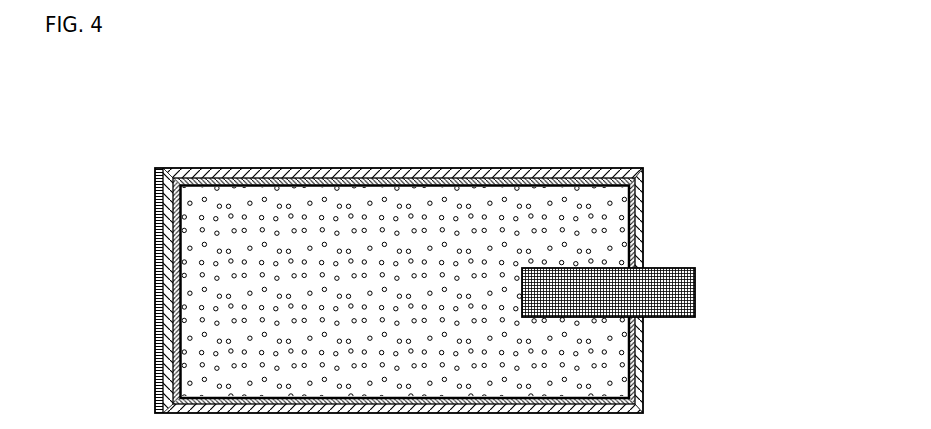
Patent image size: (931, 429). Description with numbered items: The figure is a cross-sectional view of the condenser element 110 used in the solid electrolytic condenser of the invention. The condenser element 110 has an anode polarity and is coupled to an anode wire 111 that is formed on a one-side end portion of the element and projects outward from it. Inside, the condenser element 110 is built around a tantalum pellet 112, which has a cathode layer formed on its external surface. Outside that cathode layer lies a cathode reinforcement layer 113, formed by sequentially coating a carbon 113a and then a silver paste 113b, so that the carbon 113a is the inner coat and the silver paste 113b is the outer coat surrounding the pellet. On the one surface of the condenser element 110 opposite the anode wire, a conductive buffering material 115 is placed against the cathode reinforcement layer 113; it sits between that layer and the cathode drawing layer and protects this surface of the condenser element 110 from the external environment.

The condenser element 110 is at (647, 137).
The anode wire 111 is at (695, 285).
The tantalum pellet 112 is at (364, 223).
The cathode reinforcement layer 113 is at (403, 231).
The carbon 113a is at (577, 95).
The silver paste 113b is at (548, 170).
The conductive buffering material 115 is at (155, 271).